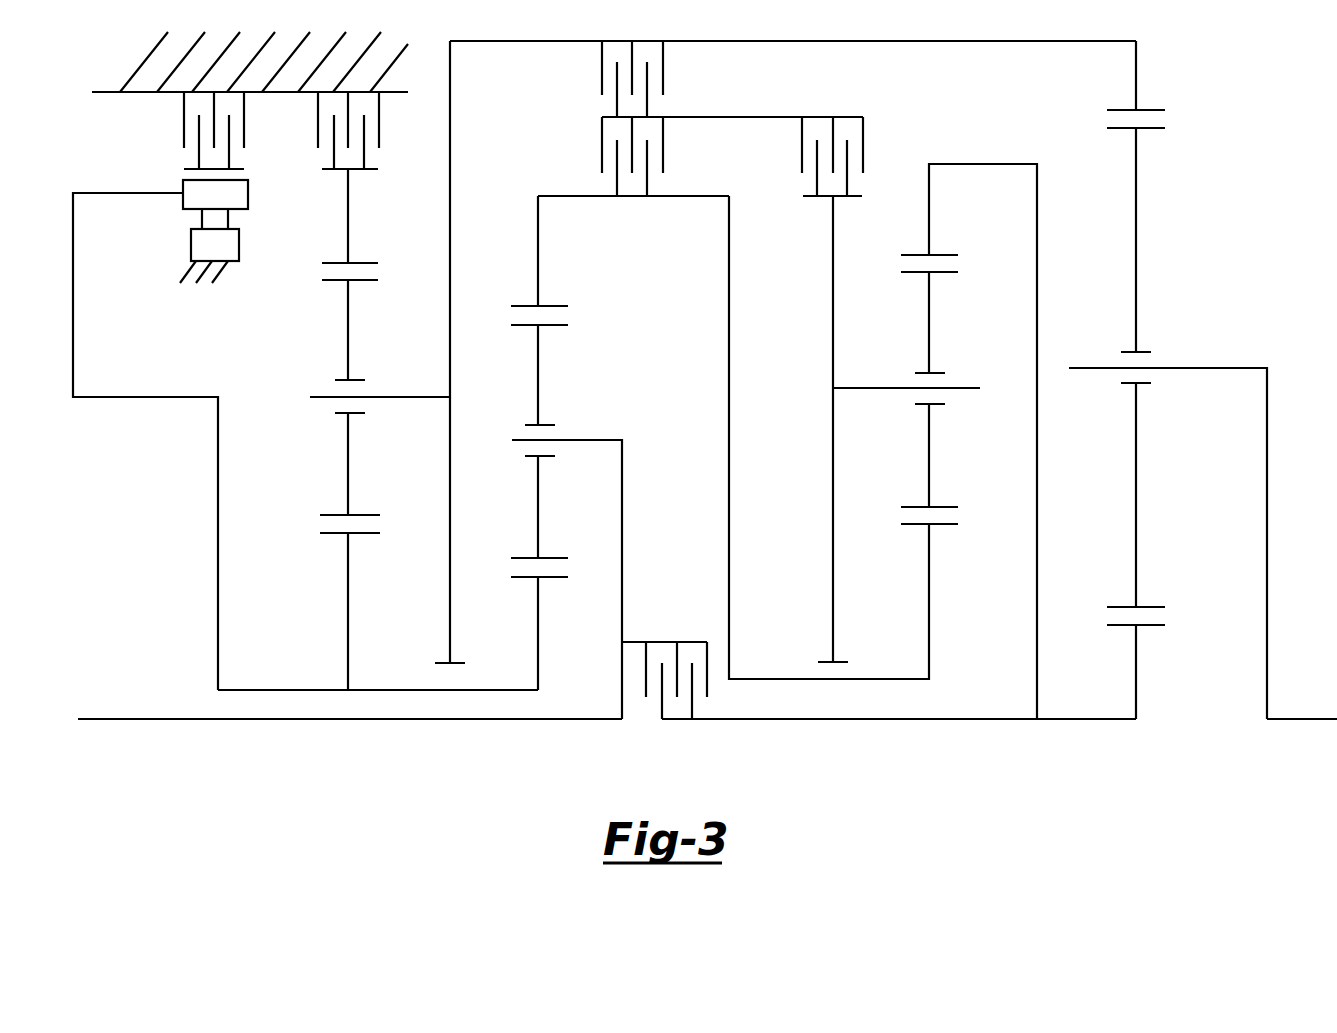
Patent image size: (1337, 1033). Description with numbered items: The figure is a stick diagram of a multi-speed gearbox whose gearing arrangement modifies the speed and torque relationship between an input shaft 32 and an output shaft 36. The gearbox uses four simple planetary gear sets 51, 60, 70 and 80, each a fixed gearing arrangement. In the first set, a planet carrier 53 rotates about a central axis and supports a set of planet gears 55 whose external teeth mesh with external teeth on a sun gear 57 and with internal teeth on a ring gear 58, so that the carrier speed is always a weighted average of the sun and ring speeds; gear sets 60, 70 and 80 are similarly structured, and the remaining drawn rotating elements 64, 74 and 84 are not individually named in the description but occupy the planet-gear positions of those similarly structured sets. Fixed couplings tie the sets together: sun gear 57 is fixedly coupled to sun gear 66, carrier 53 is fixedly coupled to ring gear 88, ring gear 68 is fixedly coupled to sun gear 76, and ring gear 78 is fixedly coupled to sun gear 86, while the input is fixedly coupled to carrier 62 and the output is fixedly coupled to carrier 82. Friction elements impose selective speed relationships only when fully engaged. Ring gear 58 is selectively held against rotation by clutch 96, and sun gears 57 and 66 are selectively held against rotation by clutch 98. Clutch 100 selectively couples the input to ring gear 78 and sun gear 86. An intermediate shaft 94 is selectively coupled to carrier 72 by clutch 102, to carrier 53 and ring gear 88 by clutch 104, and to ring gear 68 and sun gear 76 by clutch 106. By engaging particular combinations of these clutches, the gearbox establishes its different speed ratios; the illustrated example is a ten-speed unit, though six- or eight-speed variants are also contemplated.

The input shaft 32 is at (143, 719).
The output shaft 36 is at (1313, 719).
The simple planetary gear set 51 is at (333, 774).
The planet carrier 53 is at (450, 209).
The planet gears 55 is at (348, 333).
The sun gear 57 is at (348, 612).
The ring gear 58 is at (348, 215).
The simple planetary gear set 60 is at (524, 774).
The carrier 62 is at (622, 520).
The pinion gear of second planetary set 64 is at (538, 375).
The sun gear 66 is at (538, 633).
The ring gear 68 is at (538, 253).
The simple planetary gear set 70 is at (914, 774).
The carrier 72 is at (833, 365).
The pinion gear of third planetary set 74 is at (929, 323).
The sun gear 76 is at (929, 603).
The ring gear 78 is at (929, 208).
The simple planetary gear set 80 is at (1121, 774).
The carrier 82 is at (1213, 368).
The pinion gear of fourth planetary set 84 is at (1136, 240).
The sun gear 86 is at (1136, 671).
The ring gear 88 is at (1136, 76).
The intermediate shaft 94 is at (732, 117).
The clutch 96 is at (318, 117).
The clutch 98 is at (184, 117).
The clutch 100 is at (660, 642).
The clutch 102 is at (814, 117).
The clutch 104 is at (602, 68).
The clutch 106 is at (602, 146).